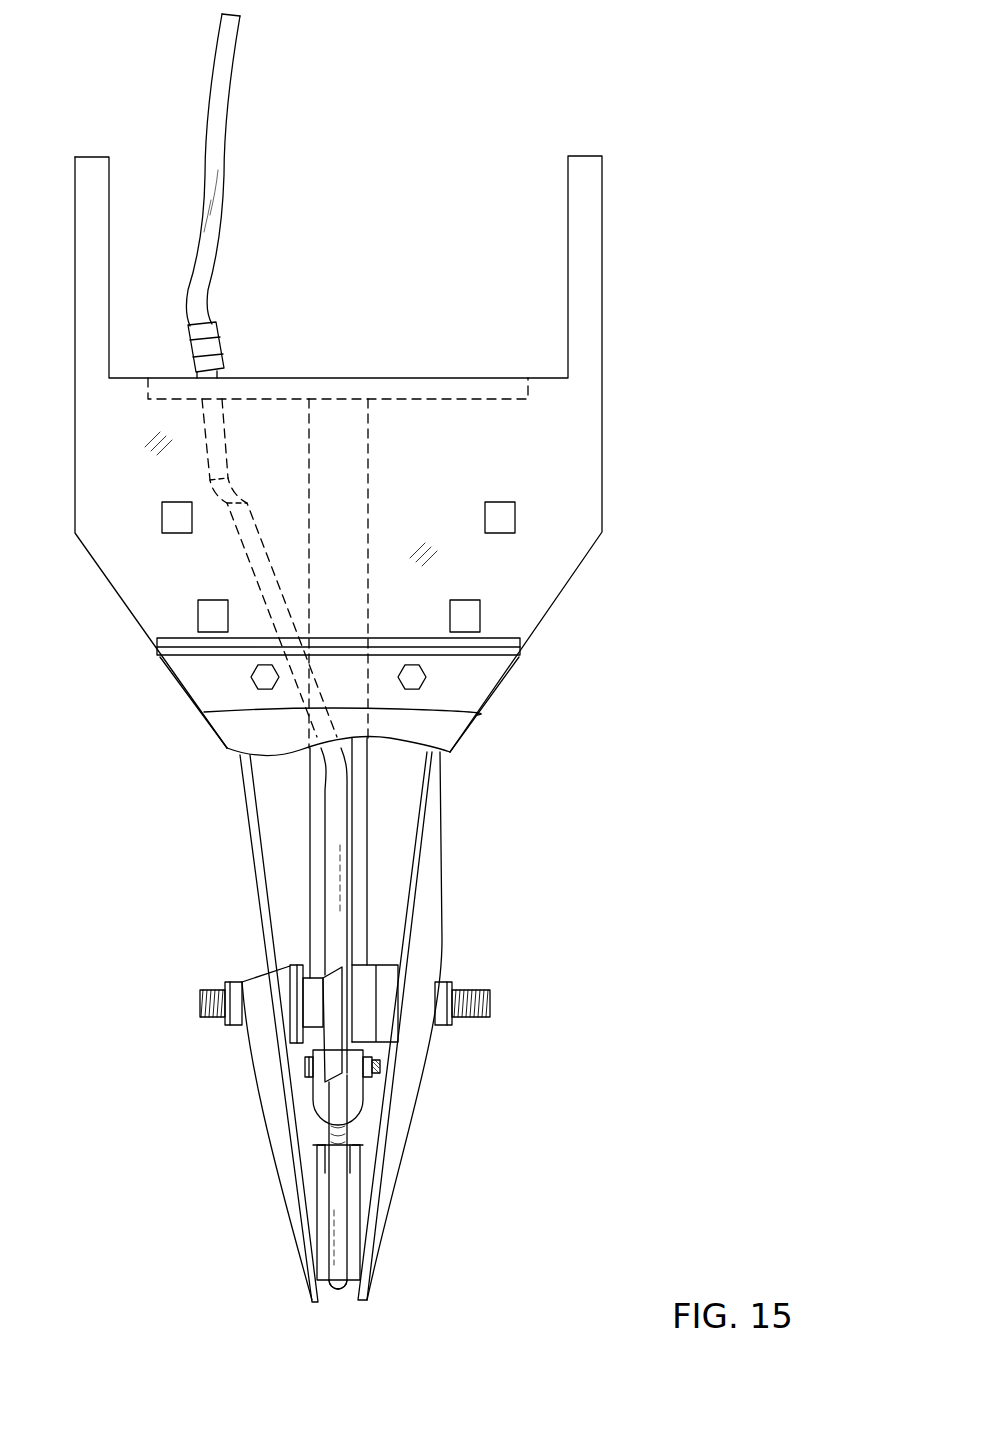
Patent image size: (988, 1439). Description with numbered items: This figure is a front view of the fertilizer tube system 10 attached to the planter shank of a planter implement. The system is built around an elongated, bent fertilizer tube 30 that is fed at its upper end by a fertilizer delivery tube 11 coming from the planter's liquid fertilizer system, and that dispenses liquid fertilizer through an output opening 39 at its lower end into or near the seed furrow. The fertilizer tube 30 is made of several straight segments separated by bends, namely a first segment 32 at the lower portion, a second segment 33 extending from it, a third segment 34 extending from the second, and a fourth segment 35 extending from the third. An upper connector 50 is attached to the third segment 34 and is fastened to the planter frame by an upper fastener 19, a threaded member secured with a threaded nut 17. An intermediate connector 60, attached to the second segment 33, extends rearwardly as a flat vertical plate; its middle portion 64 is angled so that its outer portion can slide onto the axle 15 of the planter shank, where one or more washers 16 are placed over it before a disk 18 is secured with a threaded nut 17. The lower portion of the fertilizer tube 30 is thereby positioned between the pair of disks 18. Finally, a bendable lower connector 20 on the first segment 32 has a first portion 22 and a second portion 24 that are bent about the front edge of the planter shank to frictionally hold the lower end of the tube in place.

The fertilizer tube system 10 is at (465, 127).
The fertilizer delivery tube 11 is at (225, 172).
The fourth segment 35 is at (233, 438).
The third segment 34 is at (233, 538).
The upper connector 50 is at (247, 665).
The upper fastener 19 is at (247, 683).
The second segment 33 is at (330, 837).
The fertilizer tube 30 is at (366, 819).
The intermediate connector 60 is at (308, 962).
The washer 16 is at (300, 977).
The threaded nut 17 is at (300, 1008).
The axle 15 is at (200, 1003).
The middle portion 64 is at (300, 1012).
The disk 18 is at (263, 1100).
The second portion 24 is at (350, 1133).
The first segment 32 is at (352, 1200).
The lower connector 20 is at (309, 1163).
The first portion 22 is at (305, 1137).
The output opening 39 is at (337, 1295).